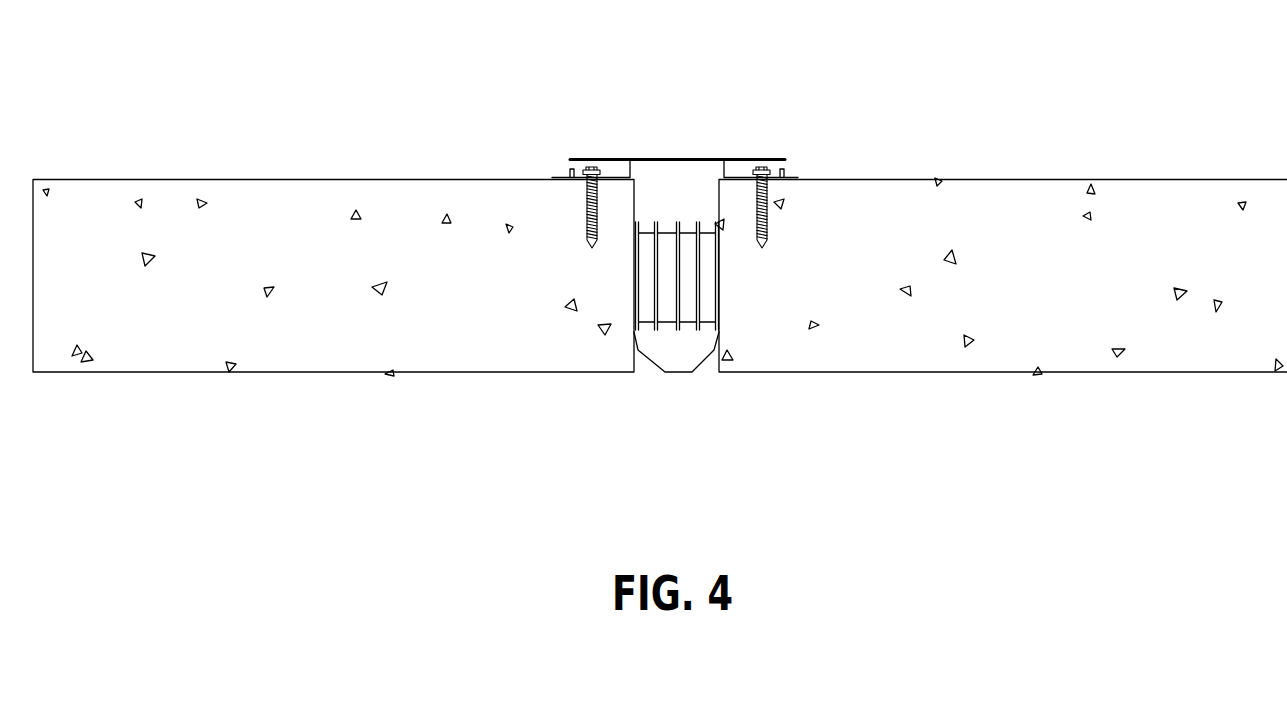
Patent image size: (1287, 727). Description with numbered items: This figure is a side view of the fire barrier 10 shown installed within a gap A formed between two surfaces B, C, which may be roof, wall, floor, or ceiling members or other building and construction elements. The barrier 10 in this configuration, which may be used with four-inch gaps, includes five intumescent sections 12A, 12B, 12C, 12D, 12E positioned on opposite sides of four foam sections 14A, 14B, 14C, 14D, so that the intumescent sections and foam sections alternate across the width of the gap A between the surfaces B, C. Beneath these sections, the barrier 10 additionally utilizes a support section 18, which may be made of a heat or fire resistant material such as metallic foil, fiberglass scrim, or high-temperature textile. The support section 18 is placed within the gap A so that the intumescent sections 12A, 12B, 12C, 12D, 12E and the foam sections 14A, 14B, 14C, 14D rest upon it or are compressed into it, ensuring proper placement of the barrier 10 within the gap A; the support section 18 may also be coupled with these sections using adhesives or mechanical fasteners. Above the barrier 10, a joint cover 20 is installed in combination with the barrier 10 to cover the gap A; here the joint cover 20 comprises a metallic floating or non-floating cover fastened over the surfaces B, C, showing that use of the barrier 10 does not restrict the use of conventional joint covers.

The fire barrier 10 is at (693, 265).
The intumescent section 12A is at (635, 268).
The intumescent section 12B is at (654, 302).
The intumescent section 12C is at (680, 246).
The intumescent section 12D is at (699, 277).
The intumescent section 12E is at (718, 312).
The foam section 14A is at (646, 232).
The foam section 14B is at (667, 232).
The foam section 14C is at (687, 233).
The foam section 14D is at (707, 237).
The support section 18 is at (692, 372).
The joint cover 20 is at (676, 159).
The gap A is at (668, 402).
The surface B is at (389, 193).
The surface C is at (1017, 193).